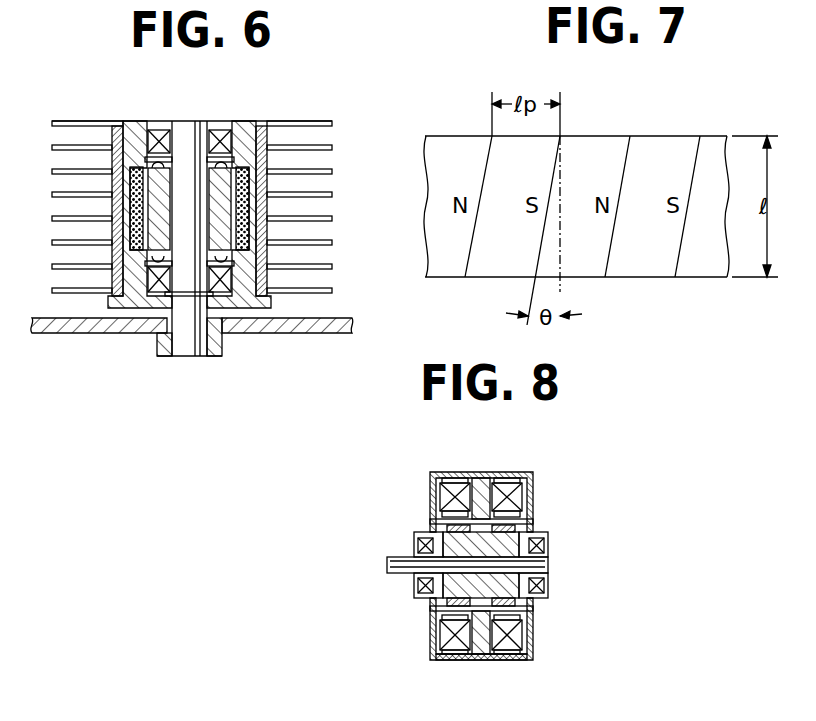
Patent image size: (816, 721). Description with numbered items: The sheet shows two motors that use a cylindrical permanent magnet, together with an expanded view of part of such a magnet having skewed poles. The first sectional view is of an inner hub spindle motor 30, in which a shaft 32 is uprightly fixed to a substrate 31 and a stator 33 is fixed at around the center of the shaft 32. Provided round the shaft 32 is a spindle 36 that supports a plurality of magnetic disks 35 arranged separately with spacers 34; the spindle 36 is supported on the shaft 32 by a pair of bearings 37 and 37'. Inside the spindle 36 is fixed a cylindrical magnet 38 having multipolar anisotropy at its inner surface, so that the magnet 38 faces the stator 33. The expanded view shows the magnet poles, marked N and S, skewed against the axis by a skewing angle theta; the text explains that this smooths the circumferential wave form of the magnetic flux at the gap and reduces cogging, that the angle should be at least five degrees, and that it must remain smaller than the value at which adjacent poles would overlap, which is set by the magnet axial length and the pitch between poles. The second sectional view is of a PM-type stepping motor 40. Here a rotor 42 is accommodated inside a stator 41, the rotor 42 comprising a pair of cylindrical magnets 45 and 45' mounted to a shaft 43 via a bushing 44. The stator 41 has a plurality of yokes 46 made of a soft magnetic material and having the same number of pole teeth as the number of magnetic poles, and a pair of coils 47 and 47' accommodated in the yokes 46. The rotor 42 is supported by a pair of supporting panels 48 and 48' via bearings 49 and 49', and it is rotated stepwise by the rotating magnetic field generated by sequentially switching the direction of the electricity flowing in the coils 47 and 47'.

In FIG. 6, the spindle motor 30 is at (121, 114).
In FIG. 6, the substrate 31 is at (135, 326).
In FIG. 6, the shaft 32 is at (190, 338).
In FIG. 6, the stator 33 is at (158, 238).
In FIG. 6, the spacers 34 is at (265, 127).
In FIG. 6, the magnetic disks 35 is at (303, 121).
In FIG. 6, the spindle 36 is at (131, 121).
In FIG. 6, the bearing 37 is at (189, 184).
In FIG. 6, the bearing 37' is at (214, 351).
In FIG. 6, the cylindrical magnet 38 is at (136, 210).
In FIG. 8, the stepping motor 40 is at (547, 470).
In FIG. 8, the stator 41 is at (480, 662).
In FIG. 8, the rotor 42 is at (437, 606).
In FIG. 8, the shaft 43 is at (390, 565).
In FIG. 8, the bushing 44 is at (512, 552).
In FIG. 8, the cylindrical magnet 45 is at (458, 502).
In FIG. 8, the cylindrical magnet 45' is at (522, 514).
In FIG. 8, the yokes 46 is at (450, 660).
In FIG. 8, the coil 47 is at (460, 474).
In FIG. 8, the coil 47' is at (500, 475).
In FIG. 8, the supporting panel 48 is at (453, 645).
In FIG. 8, the supporting panel 48' is at (538, 640).
In FIG. 8, the bearing 49 is at (403, 574).
In FIG. 8, the bearing 49' is at (567, 572).